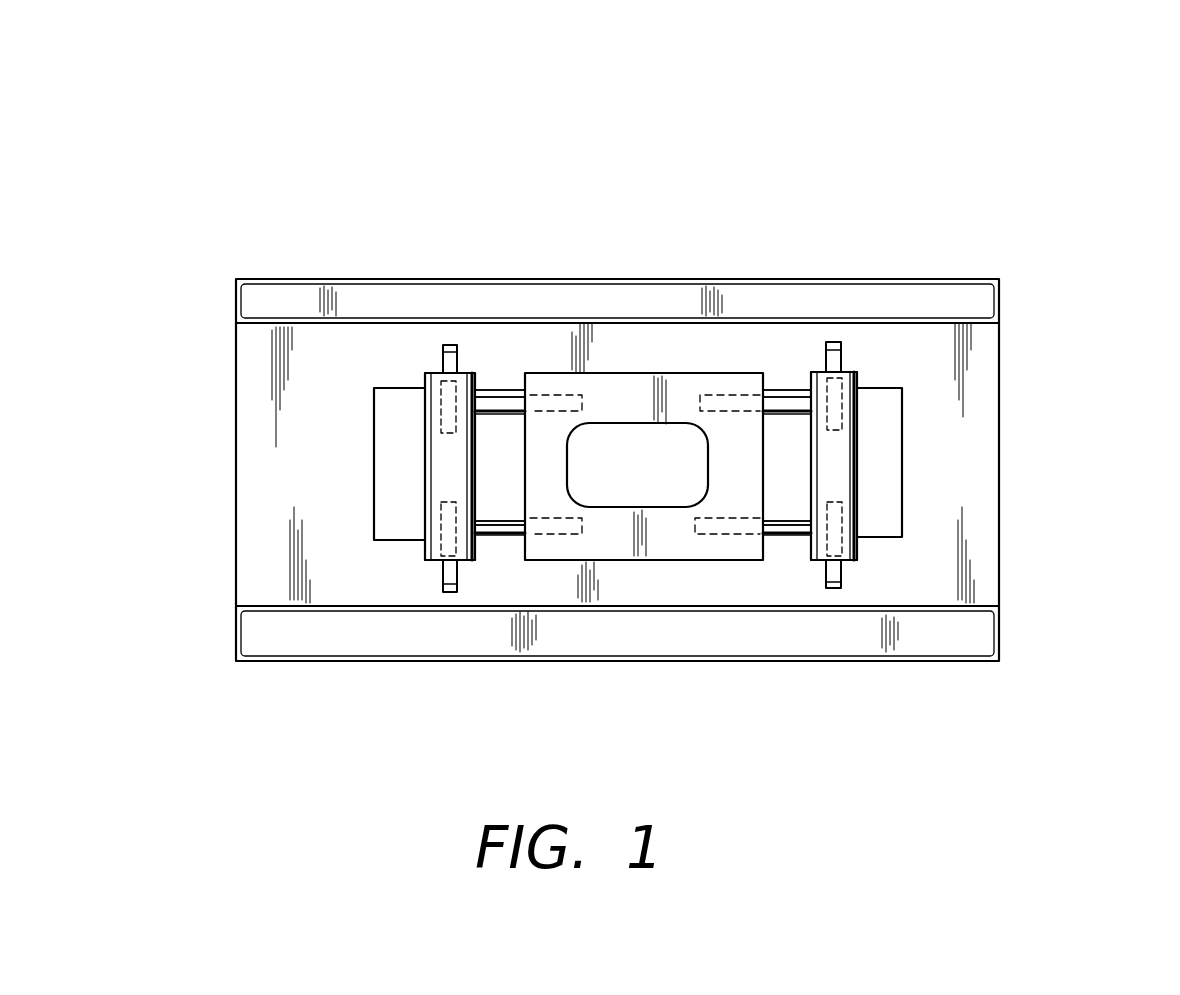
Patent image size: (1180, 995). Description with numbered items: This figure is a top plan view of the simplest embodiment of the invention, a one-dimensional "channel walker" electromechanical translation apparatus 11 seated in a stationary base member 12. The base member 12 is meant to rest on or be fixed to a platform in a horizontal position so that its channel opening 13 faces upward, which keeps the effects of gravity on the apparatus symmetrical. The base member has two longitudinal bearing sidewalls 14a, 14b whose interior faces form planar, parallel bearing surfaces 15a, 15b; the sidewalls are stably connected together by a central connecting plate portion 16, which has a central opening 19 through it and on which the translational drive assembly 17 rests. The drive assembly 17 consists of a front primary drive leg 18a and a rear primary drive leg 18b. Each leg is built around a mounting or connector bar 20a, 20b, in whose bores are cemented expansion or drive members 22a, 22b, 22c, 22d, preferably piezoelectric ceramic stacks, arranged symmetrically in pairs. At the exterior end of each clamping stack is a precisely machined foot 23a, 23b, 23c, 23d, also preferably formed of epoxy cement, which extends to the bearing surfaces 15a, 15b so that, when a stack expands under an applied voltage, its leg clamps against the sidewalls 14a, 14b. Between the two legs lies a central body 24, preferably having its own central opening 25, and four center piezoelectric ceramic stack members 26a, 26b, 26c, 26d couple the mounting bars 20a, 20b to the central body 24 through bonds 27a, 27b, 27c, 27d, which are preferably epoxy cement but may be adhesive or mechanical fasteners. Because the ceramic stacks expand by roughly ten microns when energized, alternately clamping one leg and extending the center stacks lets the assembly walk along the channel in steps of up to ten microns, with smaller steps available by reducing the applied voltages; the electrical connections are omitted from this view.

The apparatus 11 is at (1040, 158).
The stationary base member 12 is at (290, 276).
The channel opening 13 is at (899, 607).
The longitudinal bearing sidewall 14a is at (972, 300).
The longitudinal bearing sidewall 14b is at (980, 630).
The bearing surface 15a is at (258, 324).
The bearing surface 15b is at (261, 604).
The central connecting plate portion 16 is at (236, 521).
The translational drive assembly 17 is at (654, 366).
The front primary drive leg 18a is at (410, 470).
The rear primary drive leg 18b is at (875, 416).
The central opening 19 is at (898, 451).
The mounting bar 20a is at (432, 434).
The mounting bar 20b is at (860, 520).
The expansion or drive member 22a is at (440, 366).
The expansion or drive member 22b is at (446, 576).
The expansion or drive member 22c is at (845, 365).
The expansion or drive member 22d is at (848, 578).
The foot 23a is at (453, 344).
The foot 23b is at (447, 593).
The foot 23c is at (834, 342).
The foot 23d is at (833, 592).
The central body 24 is at (615, 373).
The central opening 25 is at (686, 430).
The center piezoelectric ceramic stack member 26a is at (510, 395).
The center piezoelectric ceramic stack member 26b is at (508, 534).
The center piezoelectric ceramic stack member 26c is at (810, 393).
The center piezoelectric ceramic stack member 26d is at (774, 545).
The bond 27a is at (481, 388).
The bond 27b is at (481, 536).
The bond 27c is at (782, 400).
The bond 27d is at (808, 535).